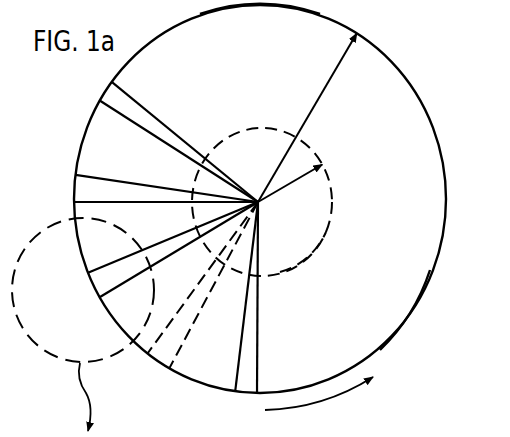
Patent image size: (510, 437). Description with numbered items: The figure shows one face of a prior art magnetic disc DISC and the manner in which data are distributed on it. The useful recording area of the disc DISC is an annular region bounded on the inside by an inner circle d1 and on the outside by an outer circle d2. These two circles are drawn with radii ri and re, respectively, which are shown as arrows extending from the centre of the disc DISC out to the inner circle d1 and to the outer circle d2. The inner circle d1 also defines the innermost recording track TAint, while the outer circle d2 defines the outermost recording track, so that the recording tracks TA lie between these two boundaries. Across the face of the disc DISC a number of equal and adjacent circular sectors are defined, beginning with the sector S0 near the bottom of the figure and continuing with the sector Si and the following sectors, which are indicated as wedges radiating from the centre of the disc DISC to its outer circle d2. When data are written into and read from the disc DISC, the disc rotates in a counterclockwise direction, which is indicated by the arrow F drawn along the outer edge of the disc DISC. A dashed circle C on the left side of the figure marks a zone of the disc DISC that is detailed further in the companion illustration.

The magnetic disc DISC is at (415, 230).
The outer circle d2 is at (226, 11).
The inner circle d1 is at (233, 134).
The inner recording track TAint is at (303, 262).
The outer radius re is at (307, 117).
The inner radius ri is at (290, 184).
The circular sector Si is at (74, 208).
The circular sector S0 is at (183, 376).
The track area TA is at (409, 316).
The arrow F is at (319, 402).
The read/write head zone C is at (40, 348).